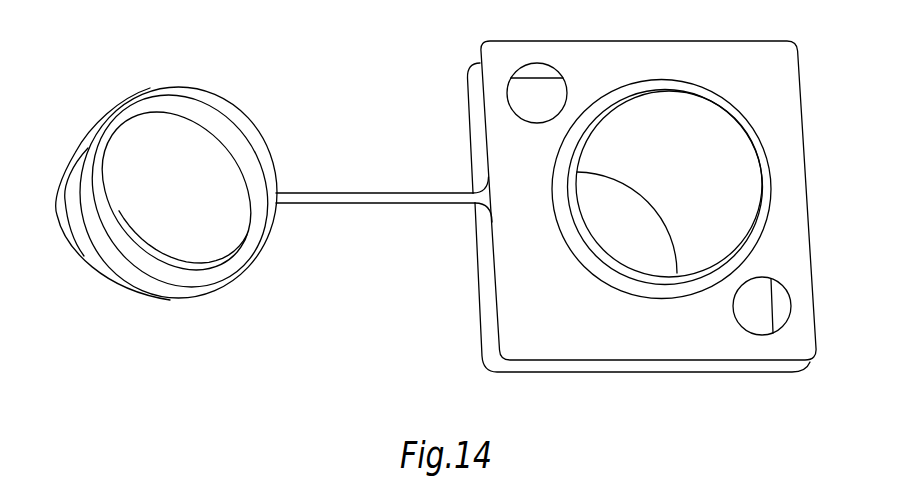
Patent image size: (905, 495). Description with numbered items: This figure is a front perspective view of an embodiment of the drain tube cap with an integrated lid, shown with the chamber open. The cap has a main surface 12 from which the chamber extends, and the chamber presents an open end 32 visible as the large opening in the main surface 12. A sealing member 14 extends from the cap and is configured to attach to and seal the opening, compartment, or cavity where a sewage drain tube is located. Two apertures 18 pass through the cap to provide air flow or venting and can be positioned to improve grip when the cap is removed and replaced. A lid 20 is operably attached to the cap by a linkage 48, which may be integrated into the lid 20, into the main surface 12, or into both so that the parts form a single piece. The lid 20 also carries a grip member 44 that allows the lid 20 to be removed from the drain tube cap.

The main surface 12 is at (520, 268).
The sealing member 14 is at (478, 110).
The aperture 18 is at (537, 90).
The lid 20 is at (218, 75).
The open end 32 is at (685, 120).
The grip member 44 is at (57, 177).
The linkage 48 is at (390, 197).